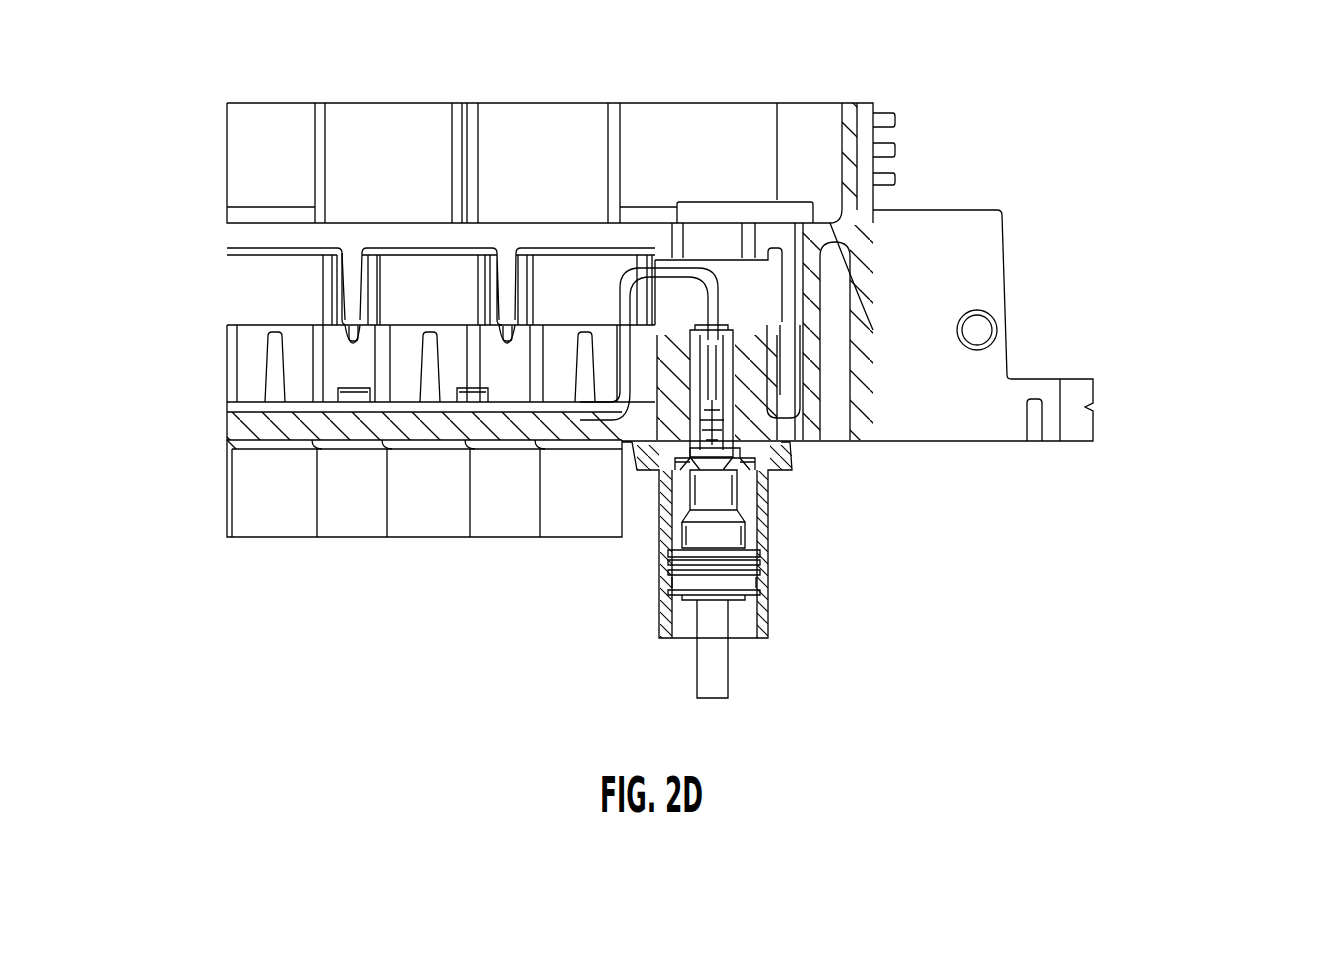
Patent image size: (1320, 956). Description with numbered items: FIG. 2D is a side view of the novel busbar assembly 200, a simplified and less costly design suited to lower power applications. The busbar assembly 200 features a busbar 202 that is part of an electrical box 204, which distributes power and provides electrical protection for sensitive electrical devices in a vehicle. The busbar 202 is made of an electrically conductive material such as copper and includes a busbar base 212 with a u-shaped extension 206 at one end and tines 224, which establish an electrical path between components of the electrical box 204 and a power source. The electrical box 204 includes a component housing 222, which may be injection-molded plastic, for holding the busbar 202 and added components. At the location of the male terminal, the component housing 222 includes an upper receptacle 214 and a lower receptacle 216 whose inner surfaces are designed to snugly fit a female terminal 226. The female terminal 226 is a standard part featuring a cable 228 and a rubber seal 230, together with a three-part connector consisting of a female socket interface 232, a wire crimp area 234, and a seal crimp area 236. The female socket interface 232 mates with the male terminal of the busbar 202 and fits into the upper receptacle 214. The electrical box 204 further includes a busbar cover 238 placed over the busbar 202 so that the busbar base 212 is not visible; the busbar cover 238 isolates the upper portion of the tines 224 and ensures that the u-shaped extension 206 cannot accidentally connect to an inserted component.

The busbar assembly 200 is at (197, 130).
The busbar 202 is at (220, 408).
The electrical box 204 is at (1178, 108).
The u-shaped extension 206 is at (672, 297).
The busbar base 212 is at (420, 402).
The upper receptacle 214 is at (797, 388).
The lower receptacle 216 is at (810, 462).
The component housing 222 is at (935, 361).
The tines 224 is at (370, 369).
The female terminal 226 is at (668, 700).
The cable 228 is at (707, 660).
The rubber seal 230 is at (664, 597).
The female socket interface 232 is at (714, 357).
The wire crimp area 234 is at (715, 490).
The seal crimp area 236 is at (713, 532).
The busbar cover 238 is at (447, 293).